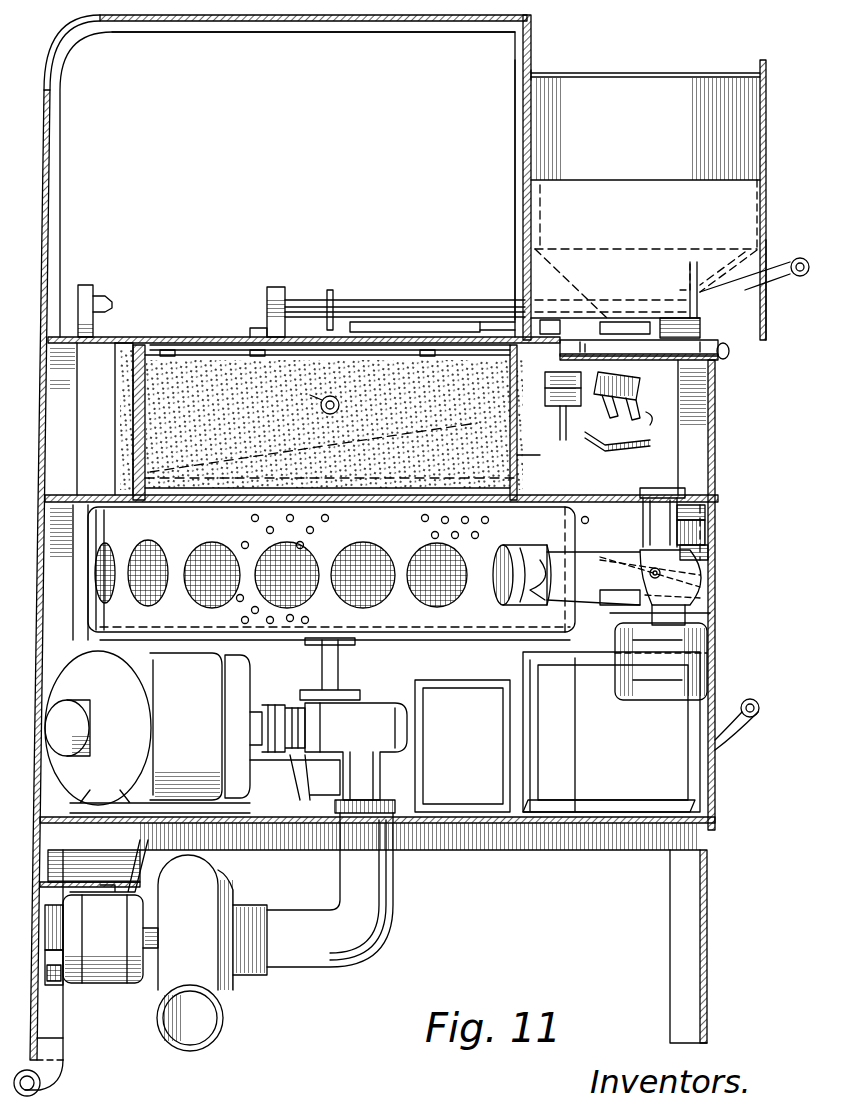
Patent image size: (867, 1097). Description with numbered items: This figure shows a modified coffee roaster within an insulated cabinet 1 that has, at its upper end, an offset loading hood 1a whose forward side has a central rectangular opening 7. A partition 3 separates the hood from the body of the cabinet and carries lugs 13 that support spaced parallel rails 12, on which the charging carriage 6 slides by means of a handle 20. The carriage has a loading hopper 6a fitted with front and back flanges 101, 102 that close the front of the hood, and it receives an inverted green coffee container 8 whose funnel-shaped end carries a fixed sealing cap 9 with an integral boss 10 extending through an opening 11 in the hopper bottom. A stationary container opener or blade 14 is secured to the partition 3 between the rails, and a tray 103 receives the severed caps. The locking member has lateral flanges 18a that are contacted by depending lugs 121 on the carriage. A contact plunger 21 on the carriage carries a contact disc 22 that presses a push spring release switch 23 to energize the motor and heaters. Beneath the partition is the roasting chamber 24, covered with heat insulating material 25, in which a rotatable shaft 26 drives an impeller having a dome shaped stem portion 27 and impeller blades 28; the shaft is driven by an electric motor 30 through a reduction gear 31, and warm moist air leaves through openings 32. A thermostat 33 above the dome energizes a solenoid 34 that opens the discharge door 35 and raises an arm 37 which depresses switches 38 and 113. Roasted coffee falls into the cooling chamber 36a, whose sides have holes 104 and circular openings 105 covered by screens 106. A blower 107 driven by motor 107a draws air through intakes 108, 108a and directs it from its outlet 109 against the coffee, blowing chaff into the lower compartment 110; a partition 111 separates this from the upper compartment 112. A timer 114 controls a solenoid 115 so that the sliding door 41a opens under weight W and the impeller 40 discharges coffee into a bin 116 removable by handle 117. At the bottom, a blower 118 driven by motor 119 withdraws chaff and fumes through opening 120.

The cabinet 1 is at (44, 440).
The loading housing or hood 1a is at (512, 28).
The partition 3 is at (143, 337).
The charging carriage 6 is at (765, 208).
The loading hopper 6a is at (601, 215).
The central rectangular opening 7 is at (531, 73).
The green coffee container 8 is at (735, 128).
The fixed sealing cap 9 is at (680, 329).
The integral boss 10 is at (639, 346).
The opening 11 is at (612, 304).
The rails 12 is at (398, 304).
The lugs 13 is at (272, 287).
The container opener or blade 14 is at (437, 318).
The lateral flanges 18a is at (595, 331).
The handle 20 is at (800, 258).
The contact plunger 21 is at (352, 302).
The contact disc 22 is at (330, 295).
The push spring release switch 23 is at (110, 302).
The roasting chamber 24 is at (368, 398).
The heat insulating material 25 is at (130, 386).
The rotatable shaft 26 is at (325, 522).
The dome shaped stem portion 27 is at (331, 417).
The impeller blades 28 is at (321, 420).
The electric motor 30 is at (147, 732).
The reduction gear 31 is at (328, 758).
The openings 32 is at (205, 340).
The thermostat 33 is at (320, 405).
The solenoid 34 is at (566, 406).
The discharge door 35 is at (540, 455).
The cooling chamber 36a is at (88, 600).
The arm 37 is at (628, 451).
The switch 38 is at (616, 404).
The impeller 40 is at (240, 640).
The sliding door 41a is at (590, 683).
The front flange 101 is at (766, 92).
The back flange 102 is at (515, 108).
The tray 103 is at (728, 360).
The holes 104 is at (250, 530).
The circular openings 105 is at (112, 545).
The screens 106 is at (150, 550).
The blower 107 is at (590, 562).
The motor 107a is at (690, 665).
The air intake 108 is at (690, 490).
The air inlet 108a is at (715, 540).
The outlet 109 is at (535, 558).
The lower compartment 110 is at (712, 616).
The partition 111 is at (60, 495).
The upper compartment 112 is at (110, 452).
The switch 113 is at (650, 421).
The timer 114 is at (462, 746).
The solenoid 115 is at (710, 555).
The bin 116 is at (613, 732).
The handle 117 is at (755, 714).
The blower 118 is at (238, 998).
The motor 119 is at (100, 990).
The opening 120 is at (393, 870).
The depending lugs 121 is at (455, 312).
The weight W is at (705, 592).